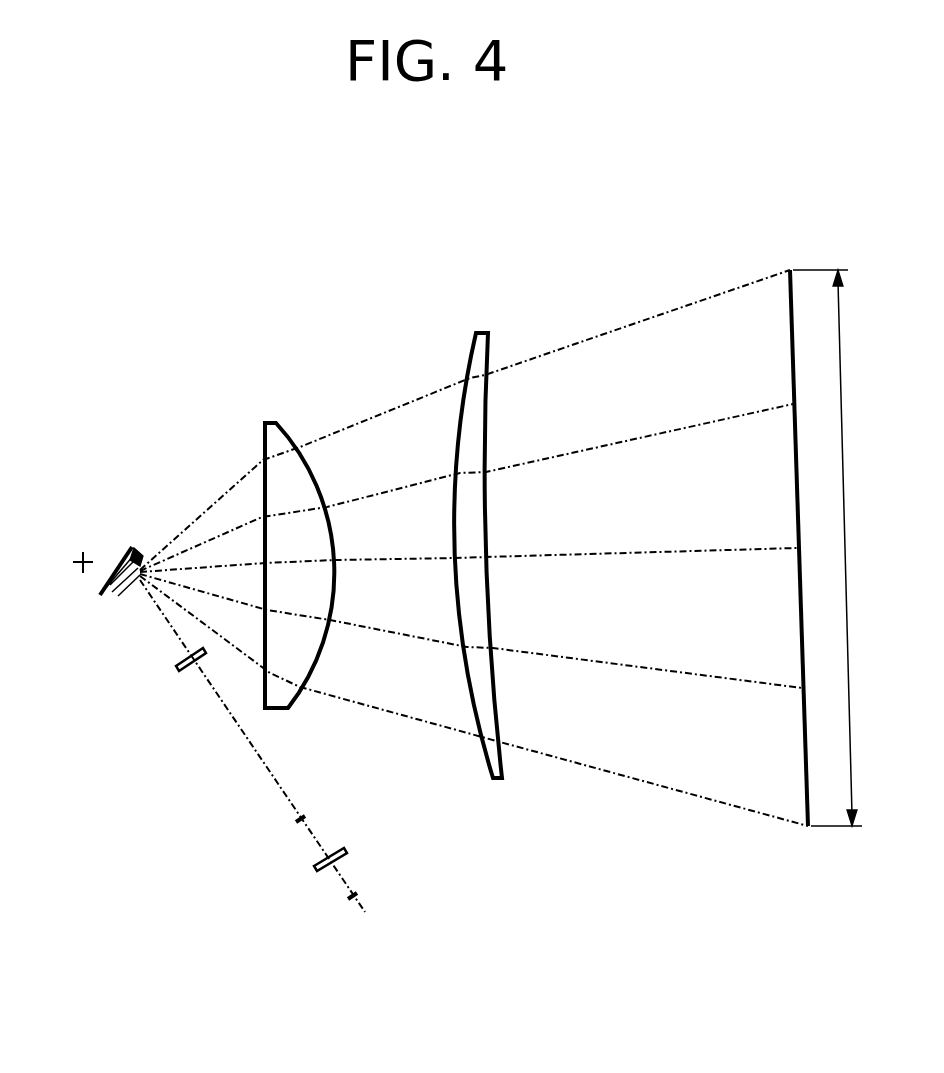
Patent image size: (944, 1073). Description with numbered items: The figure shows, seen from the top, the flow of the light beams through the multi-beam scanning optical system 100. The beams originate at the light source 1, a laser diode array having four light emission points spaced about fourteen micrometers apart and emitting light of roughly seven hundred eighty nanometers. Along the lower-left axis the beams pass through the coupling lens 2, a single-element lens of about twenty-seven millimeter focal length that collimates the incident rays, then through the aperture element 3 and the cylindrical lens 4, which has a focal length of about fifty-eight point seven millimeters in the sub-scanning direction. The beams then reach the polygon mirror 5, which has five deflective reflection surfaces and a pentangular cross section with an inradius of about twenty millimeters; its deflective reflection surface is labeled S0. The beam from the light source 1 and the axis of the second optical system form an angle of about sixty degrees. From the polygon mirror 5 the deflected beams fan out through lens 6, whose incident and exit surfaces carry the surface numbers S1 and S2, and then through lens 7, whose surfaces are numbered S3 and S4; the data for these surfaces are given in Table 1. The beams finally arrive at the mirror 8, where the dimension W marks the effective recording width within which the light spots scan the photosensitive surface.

The multi-beam scanning optical system 100 is at (197, 356).
The light source 1 is at (352, 898).
The coupling lens 2 is at (318, 870).
The aperture element 3 is at (298, 820).
The cylindrical lens 4 is at (175, 667).
The polygon mirror 5 is at (92, 581).
The lens 6 is at (283, 690).
The lens 7 is at (500, 750).
The mirror 8 is at (806, 828).
The deflective reflection surface S0 is at (137, 552).
The surface S1 is at (262, 442).
The surface S2 is at (287, 430).
The surface S3 is at (472, 352).
The surface S4 is at (490, 346).
The effective recording width W is at (839, 548).